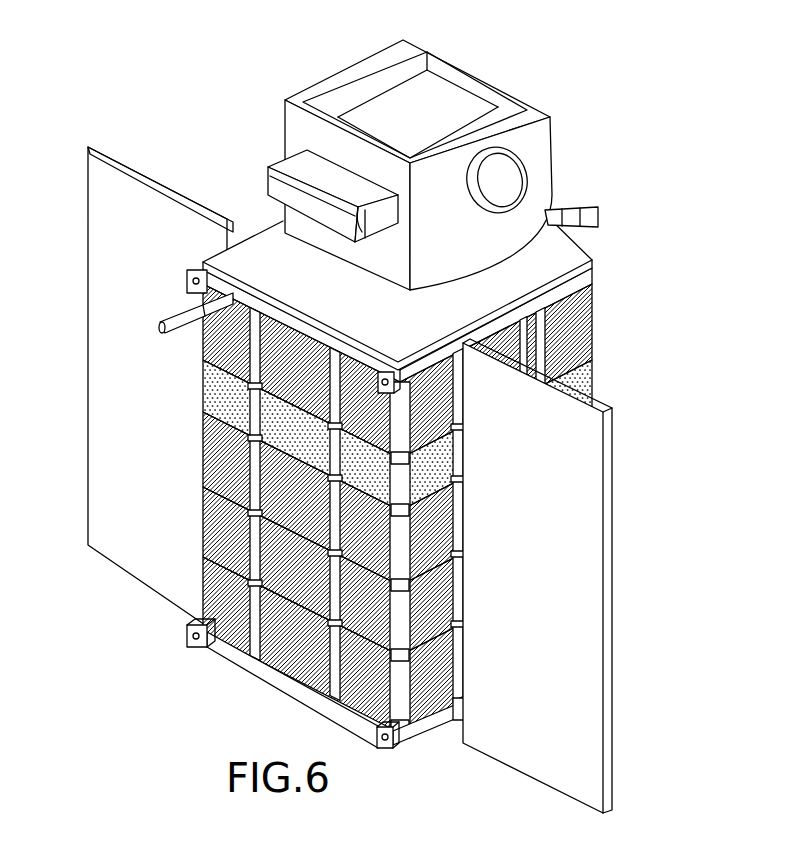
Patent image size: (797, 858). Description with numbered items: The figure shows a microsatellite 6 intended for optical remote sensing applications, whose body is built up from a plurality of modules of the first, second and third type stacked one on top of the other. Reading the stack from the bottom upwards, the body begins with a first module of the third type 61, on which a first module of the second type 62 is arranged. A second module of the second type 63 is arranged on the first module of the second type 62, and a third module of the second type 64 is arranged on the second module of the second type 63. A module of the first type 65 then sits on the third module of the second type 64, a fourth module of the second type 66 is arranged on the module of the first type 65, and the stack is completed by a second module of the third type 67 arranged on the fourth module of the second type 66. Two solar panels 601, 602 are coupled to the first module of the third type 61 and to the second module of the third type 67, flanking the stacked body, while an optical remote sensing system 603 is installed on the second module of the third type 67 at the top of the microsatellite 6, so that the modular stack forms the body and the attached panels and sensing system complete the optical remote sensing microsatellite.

The microsatellite 6 is at (398, 411).
The first module of the third type 61 is at (217, 653).
The first module of the second type 62 is at (203, 580).
The second module of the second type 63 is at (203, 510).
The third module of the second type 64 is at (203, 448).
The module of the first type 65 is at (586, 390).
The fourth module of the second type 66 is at (590, 334).
The second module of the third type 67 is at (593, 283).
The solar panel 601 is at (582, 546).
The solar panel 602 is at (143, 192).
The optical remote sensing system 603 is at (448, 107).